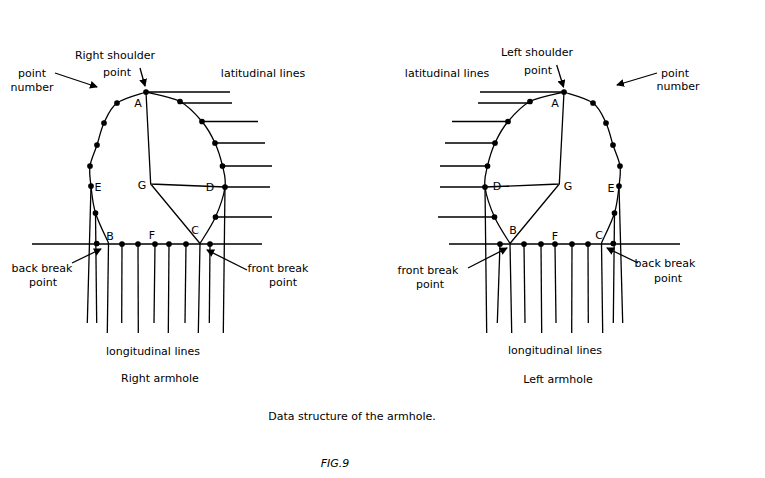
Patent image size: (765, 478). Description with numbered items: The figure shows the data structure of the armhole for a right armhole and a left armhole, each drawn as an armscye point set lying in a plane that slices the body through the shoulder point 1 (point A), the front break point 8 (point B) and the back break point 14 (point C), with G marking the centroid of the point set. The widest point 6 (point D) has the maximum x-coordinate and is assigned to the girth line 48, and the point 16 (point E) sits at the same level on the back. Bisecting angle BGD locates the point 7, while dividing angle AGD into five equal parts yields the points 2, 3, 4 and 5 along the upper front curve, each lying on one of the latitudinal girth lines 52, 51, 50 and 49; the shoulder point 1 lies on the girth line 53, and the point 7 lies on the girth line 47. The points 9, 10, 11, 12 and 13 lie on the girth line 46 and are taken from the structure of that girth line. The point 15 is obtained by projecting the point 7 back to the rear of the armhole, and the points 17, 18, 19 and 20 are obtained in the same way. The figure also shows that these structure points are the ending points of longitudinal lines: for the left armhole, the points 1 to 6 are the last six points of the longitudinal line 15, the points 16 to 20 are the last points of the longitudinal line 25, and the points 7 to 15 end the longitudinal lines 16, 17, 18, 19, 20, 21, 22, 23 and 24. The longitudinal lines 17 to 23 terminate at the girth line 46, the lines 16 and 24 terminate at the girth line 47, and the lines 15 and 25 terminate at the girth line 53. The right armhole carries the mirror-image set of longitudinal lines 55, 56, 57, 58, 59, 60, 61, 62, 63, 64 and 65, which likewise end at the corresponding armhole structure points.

The shoulder point 1 is at (354, 86).
The armhole structure point 2 is at (355, 97).
The armhole structure point 3 is at (355, 115).
The armhole structure point 4 is at (355, 137).
The armhole structure point 5 is at (354, 159).
The widest point 6 is at (355, 181).
The bisector point 7 is at (354, 212).
The front break point 8 is at (355, 239).
The girth line point 9 is at (355, 253).
The girth line point 10 is at (354, 237).
The girth line point 11 is at (353, 231).
The girth line point 12 is at (355, 236).
The girth line point 13 is at (357, 253).
The back break point 14 is at (352, 238).
The rear armhole point / longitudinal line 15 is at (356, 266).
The back widest point / longitudinal line 16 is at (357, 255).
The rear armhole point / longitudinal line 17 is at (354, 253).
The rear armhole point / longitudinal line 18 is at (354, 235).
The rear armhole point / longitudinal line 19 is at (353, 230).
The rear armhole point / longitudinal line 20 is at (355, 213).
The longitudinal line 21 is at (577, 294).
The longitudinal line 22 is at (592, 289).
The longitudinal line 23 is at (603, 294).
The longitudinal line 24 is at (614, 273).
The longitudinal line 25 is at (627, 266).
The girth line 46 is at (356, 247).
The girth line 47 is at (355, 218).
The girth line 48 is at (355, 187).
The girth line 49 is at (355, 162).
The girth line 50 is at (355, 139).
The girth line 51 is at (355, 119).
The girth line 52 is at (355, 103).
The girth line 53 is at (355, 92).
The longitudinal line 55 is at (87, 265).
The longitudinal line 56 is at (97, 273).
The longitudinal line 57 is at (109, 294).
The longitudinal line 58 is at (122, 289).
The longitudinal line 59 is at (135, 294).
The longitudinal line 60 is at (152, 289).
The longitudinal line 61 is at (166, 294).
The longitudinal line 62 is at (183, 288).
The longitudinal line 63 is at (200, 295).
The longitudinal line 64 is at (210, 288).
The longitudinal line 65 is at (224, 265).